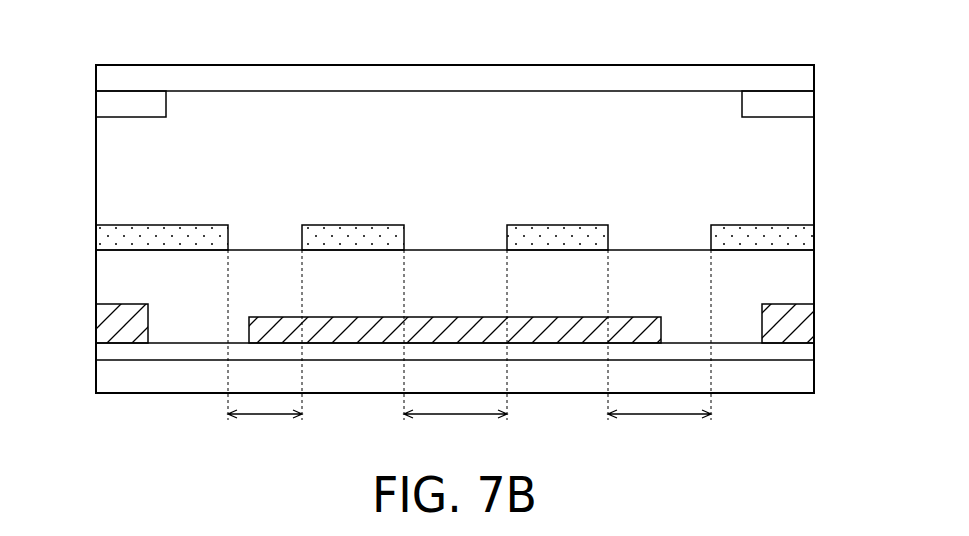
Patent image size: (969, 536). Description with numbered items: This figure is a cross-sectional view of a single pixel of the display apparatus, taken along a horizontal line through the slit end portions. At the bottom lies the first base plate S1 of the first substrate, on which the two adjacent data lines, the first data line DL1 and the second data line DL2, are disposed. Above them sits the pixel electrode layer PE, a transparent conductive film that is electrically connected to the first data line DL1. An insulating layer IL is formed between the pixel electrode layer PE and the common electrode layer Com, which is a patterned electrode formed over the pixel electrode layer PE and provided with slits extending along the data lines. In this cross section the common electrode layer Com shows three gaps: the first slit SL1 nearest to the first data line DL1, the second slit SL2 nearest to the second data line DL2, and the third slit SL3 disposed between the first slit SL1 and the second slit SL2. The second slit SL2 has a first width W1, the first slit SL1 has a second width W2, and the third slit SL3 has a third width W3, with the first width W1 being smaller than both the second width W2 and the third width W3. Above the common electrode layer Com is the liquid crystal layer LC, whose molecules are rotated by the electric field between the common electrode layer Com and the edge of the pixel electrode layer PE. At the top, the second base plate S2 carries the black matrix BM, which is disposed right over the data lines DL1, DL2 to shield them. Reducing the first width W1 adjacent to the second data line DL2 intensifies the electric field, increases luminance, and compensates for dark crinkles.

The second base plate S2 is at (798, 79).
The black matrix BM is at (112, 104).
The liquid crystal layer LC is at (433, 202).
The common electrode layer Com is at (111, 240).
The insulating layer IL is at (797, 285).
The first base plate S1 is at (797, 380).
The second data line DL2 is at (117, 332).
The first data line DL1 is at (797, 333).
The pixel electrode layer PE is at (455, 331).
The first slit SL1 is at (666, 221).
The second slit SL2 is at (276, 221).
The third slit SL3 is at (443, 221).
The first width W1 is at (265, 429).
The second width W2 is at (659, 429).
The third width W3 is at (455, 429).